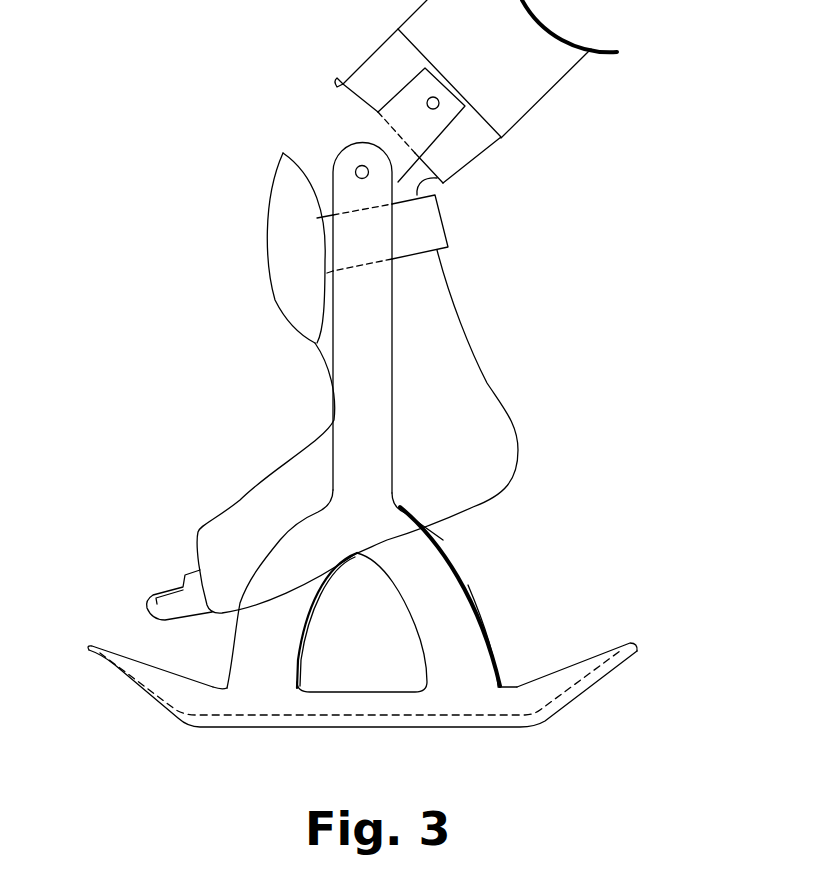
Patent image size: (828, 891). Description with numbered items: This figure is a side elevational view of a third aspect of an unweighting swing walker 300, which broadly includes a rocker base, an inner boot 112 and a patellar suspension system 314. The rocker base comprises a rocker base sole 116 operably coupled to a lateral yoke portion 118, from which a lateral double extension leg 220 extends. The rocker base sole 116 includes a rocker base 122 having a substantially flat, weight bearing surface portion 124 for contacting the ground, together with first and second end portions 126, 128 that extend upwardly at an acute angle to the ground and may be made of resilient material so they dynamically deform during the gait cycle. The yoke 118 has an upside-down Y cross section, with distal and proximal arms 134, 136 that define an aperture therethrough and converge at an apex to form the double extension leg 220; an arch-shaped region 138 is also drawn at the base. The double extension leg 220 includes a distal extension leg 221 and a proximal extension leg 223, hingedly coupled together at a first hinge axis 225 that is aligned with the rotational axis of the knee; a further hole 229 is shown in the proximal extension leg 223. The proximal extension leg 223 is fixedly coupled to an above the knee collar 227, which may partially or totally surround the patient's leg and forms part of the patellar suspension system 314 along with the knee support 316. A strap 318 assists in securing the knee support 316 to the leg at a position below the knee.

The inner boot 112 is at (490, 413).
The rocker base sole 116 is at (362, 650).
The lateral yoke portion 118 is at (462, 557).
The rocker base 122 is at (362, 693).
The weight bearing surface portion 124 is at (275, 727).
The first end portion 126 is at (120, 653).
The second end portion 128 is at (598, 653).
The distal arm 134 is at (250, 647).
The proximal arm 136 is at (423, 666).
The arch support 138 is at (365, 643).
The double extension leg 220 is at (392, 392).
The distal extension leg 221 is at (372, 447).
The proximal extension leg 223 is at (433, 127).
The first hinge axis 225 is at (356, 168).
The above the knee collar 227 is at (380, 62).
The fastener hole 229 is at (439, 101).
The swing walker 300 is at (403, 395).
The patellar suspension system 314 is at (256, 248).
The knee support 316 is at (292, 280).
The strap 318 is at (425, 218).